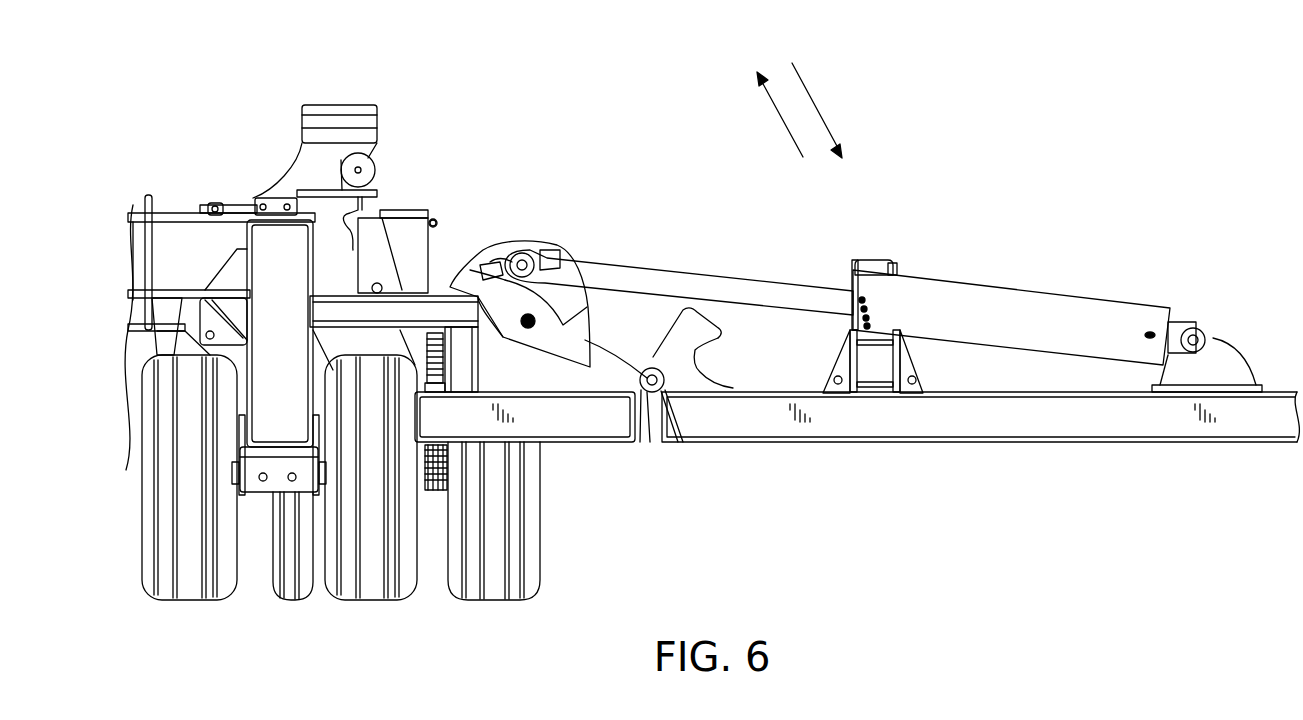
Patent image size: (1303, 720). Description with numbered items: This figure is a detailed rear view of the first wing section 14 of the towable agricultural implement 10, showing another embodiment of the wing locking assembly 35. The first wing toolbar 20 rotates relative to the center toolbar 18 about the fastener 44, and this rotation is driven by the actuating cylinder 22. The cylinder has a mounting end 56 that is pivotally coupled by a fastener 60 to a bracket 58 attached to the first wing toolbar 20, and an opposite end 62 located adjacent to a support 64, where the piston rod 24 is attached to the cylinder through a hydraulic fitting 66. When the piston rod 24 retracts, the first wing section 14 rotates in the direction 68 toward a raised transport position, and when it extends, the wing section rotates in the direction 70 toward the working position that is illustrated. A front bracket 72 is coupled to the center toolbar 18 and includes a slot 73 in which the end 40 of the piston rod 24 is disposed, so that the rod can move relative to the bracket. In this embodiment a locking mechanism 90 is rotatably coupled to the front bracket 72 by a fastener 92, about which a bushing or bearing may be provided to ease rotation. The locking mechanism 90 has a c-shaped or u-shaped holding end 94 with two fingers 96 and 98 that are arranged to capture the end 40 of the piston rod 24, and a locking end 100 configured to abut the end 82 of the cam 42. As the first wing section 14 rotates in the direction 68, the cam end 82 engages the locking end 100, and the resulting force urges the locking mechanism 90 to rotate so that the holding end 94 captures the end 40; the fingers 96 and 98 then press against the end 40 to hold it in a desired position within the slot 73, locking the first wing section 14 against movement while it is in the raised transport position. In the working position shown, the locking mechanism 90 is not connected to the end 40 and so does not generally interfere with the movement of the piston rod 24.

The towable agricultural implement 10 is at (464, 65).
The first wing section 14 is at (934, 466).
The center toolbar 18 is at (582, 423).
The first wing toolbar 20 is at (1048, 422).
The actuating cylinder 22 is at (1028, 308).
The piston rod 24 is at (693, 285).
The wing locking assembly 35 is at (624, 191).
The end of the piston rod 40 is at (515, 258).
The cam 42 is at (698, 350).
The fastener 44 is at (665, 405).
The mounting end 56 is at (1178, 332).
The bracket 58 is at (1227, 357).
The fastener 60 is at (1193, 332).
The end of the actuating cylinder 62 is at (878, 287).
The support 64 is at (873, 262).
The hydraulic fitting 66 is at (848, 292).
The direction 68 is at (783, 122).
The direction 70 is at (823, 112).
The front bracket 72 is at (478, 273).
The slot 73 is at (493, 263).
The end of the cam 82 is at (716, 326).
The locking mechanism 90 is at (565, 327).
The fastener 92 is at (528, 330).
The holding end 94 is at (508, 297).
The finger 96 is at (497, 263).
The finger 98 is at (547, 250).
The locking end 100 is at (600, 333).